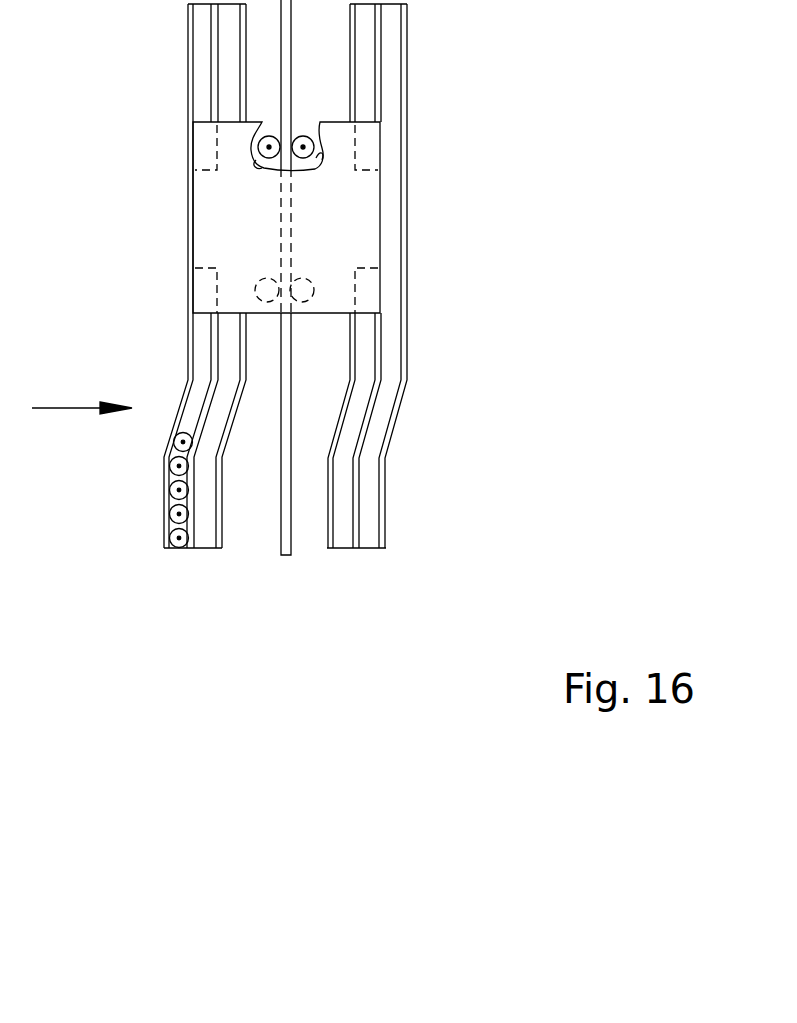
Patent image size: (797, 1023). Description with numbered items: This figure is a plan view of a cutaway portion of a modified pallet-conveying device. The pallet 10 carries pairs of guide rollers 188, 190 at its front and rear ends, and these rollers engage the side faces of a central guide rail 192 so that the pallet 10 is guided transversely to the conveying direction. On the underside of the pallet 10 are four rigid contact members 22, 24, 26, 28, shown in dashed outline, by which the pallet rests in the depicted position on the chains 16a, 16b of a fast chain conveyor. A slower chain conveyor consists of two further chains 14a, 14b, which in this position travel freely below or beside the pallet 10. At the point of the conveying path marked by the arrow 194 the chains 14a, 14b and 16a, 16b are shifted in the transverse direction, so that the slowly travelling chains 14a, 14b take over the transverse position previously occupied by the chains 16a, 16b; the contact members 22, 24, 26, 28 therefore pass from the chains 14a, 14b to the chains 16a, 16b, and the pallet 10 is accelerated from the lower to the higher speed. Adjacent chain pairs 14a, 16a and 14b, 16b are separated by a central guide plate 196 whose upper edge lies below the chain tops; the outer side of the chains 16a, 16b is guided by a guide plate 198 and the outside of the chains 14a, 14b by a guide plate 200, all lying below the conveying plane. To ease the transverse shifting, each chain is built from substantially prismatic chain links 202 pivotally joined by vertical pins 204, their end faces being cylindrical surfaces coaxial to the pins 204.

The pallet 10 is at (212, 235).
The chain 14a is at (210, 545).
The chain 14b is at (371, 548).
The chain 16a is at (183, 548).
The chain 16b is at (344, 545).
The contact member 22 is at (367, 162).
The contact member 24 is at (367, 300).
The contact member 26 is at (204, 152).
The contact member 28 is at (204, 287).
The guide roller 188 is at (262, 165).
The guide roller 190 is at (314, 154).
The guide rail 192 is at (283, 89).
The arrow 194 is at (90, 409).
The central guide plate 196 is at (216, 53).
The guide plate 198 is at (188, 22).
The guide plate 200 is at (245, 93).
The chain link 202 is at (176, 520).
The vertical pin 204 is at (178, 497).